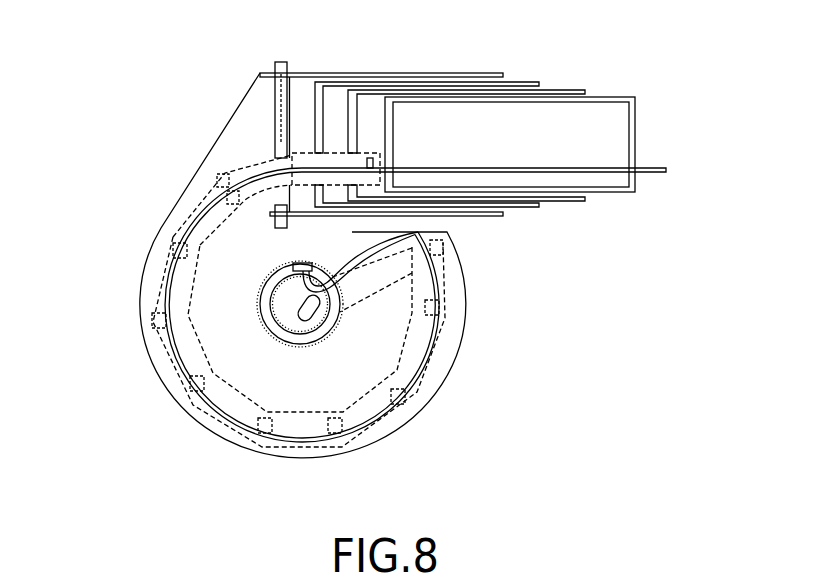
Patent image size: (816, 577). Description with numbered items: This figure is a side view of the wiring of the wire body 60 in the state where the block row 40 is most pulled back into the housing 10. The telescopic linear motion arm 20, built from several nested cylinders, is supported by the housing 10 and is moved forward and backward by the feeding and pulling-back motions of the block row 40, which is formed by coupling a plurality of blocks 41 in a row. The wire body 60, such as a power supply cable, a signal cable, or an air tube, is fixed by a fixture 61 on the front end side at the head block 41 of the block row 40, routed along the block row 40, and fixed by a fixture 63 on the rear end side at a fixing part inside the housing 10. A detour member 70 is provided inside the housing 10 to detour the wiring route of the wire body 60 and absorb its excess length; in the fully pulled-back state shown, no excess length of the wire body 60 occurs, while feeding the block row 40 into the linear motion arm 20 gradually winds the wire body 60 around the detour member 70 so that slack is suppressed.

The housing 10 is at (444, 395).
The linear motion arm 20 is at (632, 83).
The block row 40 is at (455, 283).
The block 41 is at (442, 342).
The wire body 60 is at (577, 168).
The fixture 61 is at (369, 157).
The fixture 63 is at (303, 263).
The detour member 70 is at (313, 321).